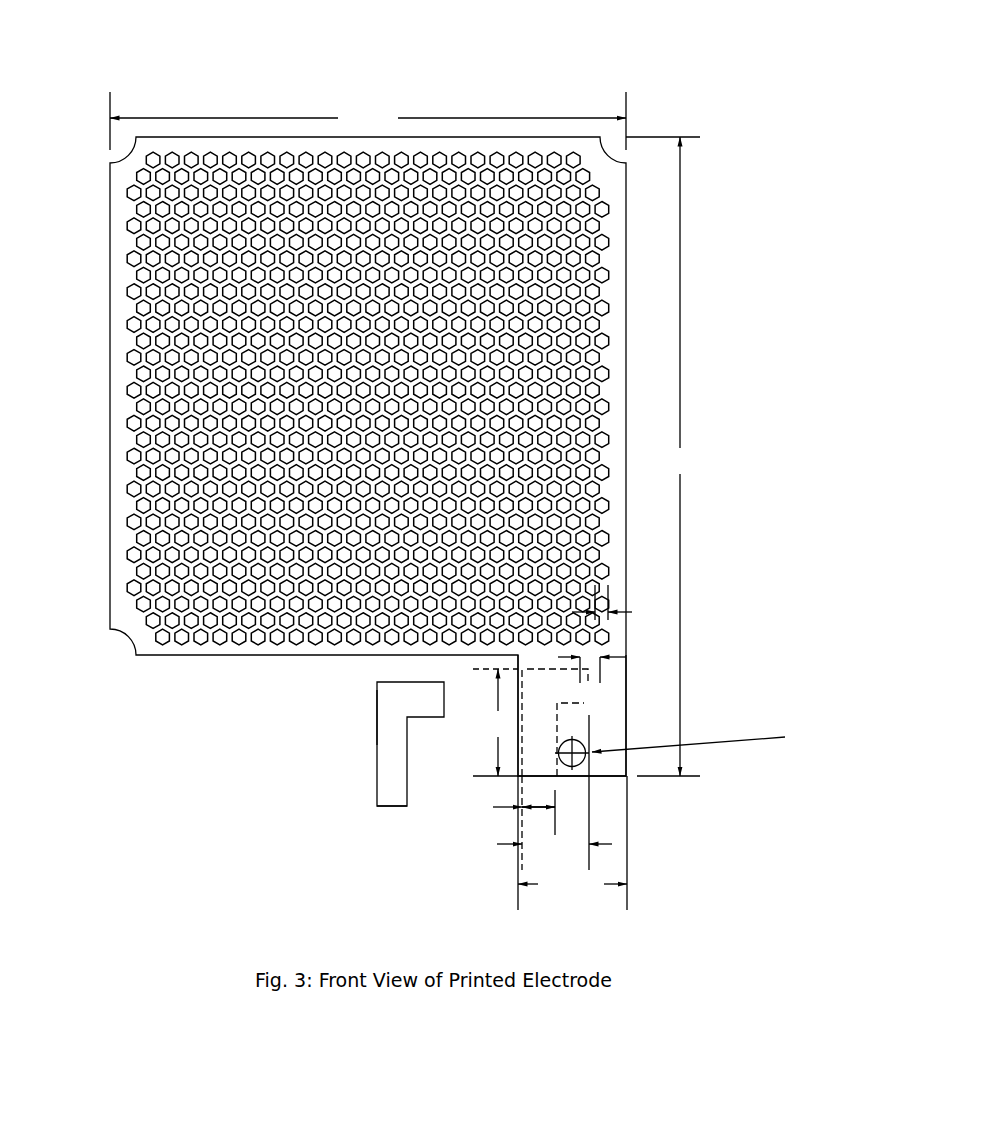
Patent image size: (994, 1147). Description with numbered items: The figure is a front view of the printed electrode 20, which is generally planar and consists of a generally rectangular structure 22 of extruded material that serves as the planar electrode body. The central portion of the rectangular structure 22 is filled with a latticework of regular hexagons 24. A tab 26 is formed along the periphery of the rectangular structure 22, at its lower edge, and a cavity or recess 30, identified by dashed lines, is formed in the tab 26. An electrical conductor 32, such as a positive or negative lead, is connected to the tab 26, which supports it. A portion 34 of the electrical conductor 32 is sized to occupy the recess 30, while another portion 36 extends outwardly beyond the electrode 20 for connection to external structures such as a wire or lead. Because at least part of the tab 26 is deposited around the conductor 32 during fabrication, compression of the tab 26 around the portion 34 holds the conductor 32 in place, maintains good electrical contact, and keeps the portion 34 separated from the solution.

The electrode 20 is at (696, 76).
The rectangular structure 22 is at (110, 404).
The latticework of regular hexagons 24 is at (183, 475).
The tab 26 is at (626, 727).
The recess 30 is at (588, 695).
The electrical conductor 32 is at (410, 744).
The portion of the electrical conductor 34 is at (377, 718).
The portion of the electrical conductor 36 is at (377, 803).